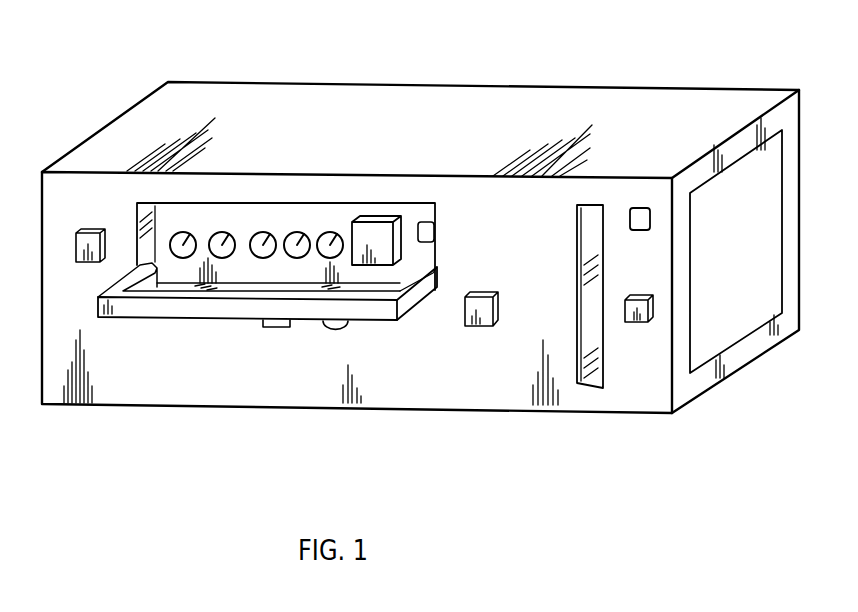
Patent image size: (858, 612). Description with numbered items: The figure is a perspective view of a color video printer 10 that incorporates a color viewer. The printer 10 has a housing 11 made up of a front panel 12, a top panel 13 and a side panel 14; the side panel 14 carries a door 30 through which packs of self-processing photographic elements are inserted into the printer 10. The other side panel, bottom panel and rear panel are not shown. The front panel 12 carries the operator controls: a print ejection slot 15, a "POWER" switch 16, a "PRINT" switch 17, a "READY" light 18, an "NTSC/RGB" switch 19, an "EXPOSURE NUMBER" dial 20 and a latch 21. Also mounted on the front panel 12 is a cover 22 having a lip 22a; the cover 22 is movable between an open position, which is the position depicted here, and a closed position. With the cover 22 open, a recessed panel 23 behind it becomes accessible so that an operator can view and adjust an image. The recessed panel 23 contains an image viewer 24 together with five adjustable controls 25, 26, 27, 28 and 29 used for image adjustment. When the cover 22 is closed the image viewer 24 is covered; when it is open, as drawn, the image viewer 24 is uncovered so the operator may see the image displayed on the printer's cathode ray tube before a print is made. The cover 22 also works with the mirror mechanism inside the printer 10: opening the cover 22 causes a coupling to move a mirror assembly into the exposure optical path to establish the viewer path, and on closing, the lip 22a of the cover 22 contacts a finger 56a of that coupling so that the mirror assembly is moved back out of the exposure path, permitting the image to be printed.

The printer 10 is at (500, 77).
The housing 11 is at (788, 89).
The front panel 12 is at (648, 400).
The top panel 13 is at (142, 115).
The side panel 14 is at (791, 123).
The print ejection slot 15 is at (577, 300).
The "POWER" switch 16 is at (91, 232).
The "PRINT" switch 17 is at (278, 327).
The "READY" light 18 is at (333, 328).
The "NTSC/RGB" switch 19 is at (490, 296).
The "EXPOSURE NUMBER" dial 20 is at (641, 207).
The latch 21 is at (645, 298).
The cover 22 is at (188, 314).
The lip 22a is at (419, 296).
The recessed panel 23 is at (244, 219).
The image viewer 24 is at (377, 228).
The adjustable control 25 is at (178, 235).
The adjustable control 26 is at (217, 235).
The adjustable control 27 is at (260, 235).
The adjustable control 28 is at (294, 235).
The adjustable control 29 is at (327, 235).
The door 30 is at (766, 243).
The finger 56a is at (436, 229).